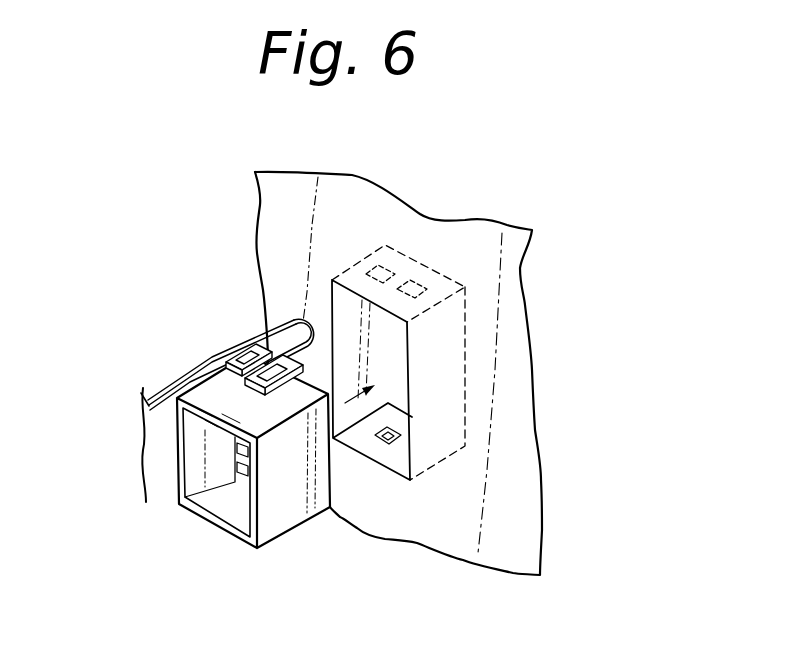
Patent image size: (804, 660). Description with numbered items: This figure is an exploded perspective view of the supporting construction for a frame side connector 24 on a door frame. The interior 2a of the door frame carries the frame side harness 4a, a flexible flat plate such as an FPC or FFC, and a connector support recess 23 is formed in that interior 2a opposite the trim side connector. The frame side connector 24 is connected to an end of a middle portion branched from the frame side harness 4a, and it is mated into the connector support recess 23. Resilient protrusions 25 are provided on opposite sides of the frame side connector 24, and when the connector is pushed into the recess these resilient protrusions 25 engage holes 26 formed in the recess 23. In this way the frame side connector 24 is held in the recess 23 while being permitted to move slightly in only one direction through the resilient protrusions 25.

The interior of the door frame 2a is at (258, 228).
The connector support recess 23 is at (343, 307).
The holes 26 is at (412, 260).
The frame side connector 24 is at (190, 372).
The resilient protrusions 25 is at (212, 357).
The frame side harness 4a is at (155, 425).